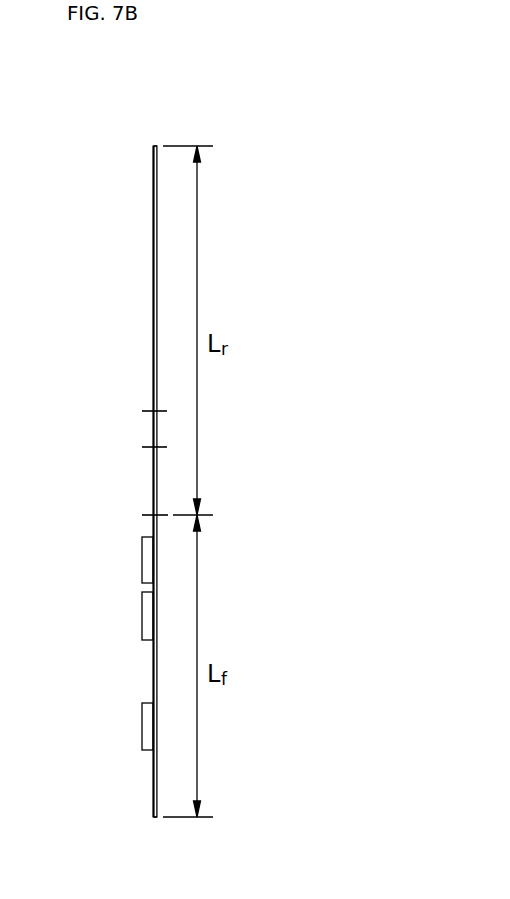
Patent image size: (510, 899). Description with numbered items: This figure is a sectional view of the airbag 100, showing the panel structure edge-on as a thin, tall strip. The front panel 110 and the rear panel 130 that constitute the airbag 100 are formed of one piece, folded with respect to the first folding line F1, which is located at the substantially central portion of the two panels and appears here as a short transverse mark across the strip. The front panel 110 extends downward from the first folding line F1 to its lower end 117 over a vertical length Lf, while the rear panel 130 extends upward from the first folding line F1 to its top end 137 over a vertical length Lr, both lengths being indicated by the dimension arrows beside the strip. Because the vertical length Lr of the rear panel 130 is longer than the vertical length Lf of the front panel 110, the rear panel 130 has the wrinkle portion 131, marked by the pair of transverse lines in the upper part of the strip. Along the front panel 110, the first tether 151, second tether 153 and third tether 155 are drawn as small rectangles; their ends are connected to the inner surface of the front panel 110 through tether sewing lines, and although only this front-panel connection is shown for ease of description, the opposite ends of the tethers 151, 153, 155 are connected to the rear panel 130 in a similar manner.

The airbag 100 is at (110, 138).
The front panel 110 is at (156, 786).
The second end portion 117 is at (154, 818).
The rear panel 130 is at (153, 238).
The wrinkle portion 131 is at (140, 426).
The top end of the rear panel 137 is at (155, 146).
The first folding line F1 is at (147, 513).
The first tether 151 is at (142, 560).
The second tether 153 is at (142, 618).
The third tether 155 is at (142, 727).